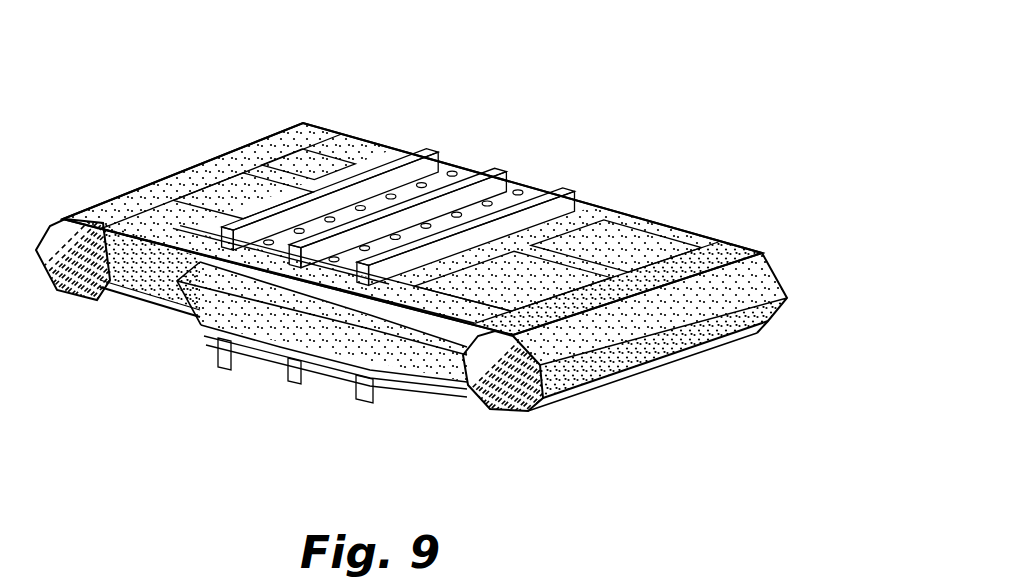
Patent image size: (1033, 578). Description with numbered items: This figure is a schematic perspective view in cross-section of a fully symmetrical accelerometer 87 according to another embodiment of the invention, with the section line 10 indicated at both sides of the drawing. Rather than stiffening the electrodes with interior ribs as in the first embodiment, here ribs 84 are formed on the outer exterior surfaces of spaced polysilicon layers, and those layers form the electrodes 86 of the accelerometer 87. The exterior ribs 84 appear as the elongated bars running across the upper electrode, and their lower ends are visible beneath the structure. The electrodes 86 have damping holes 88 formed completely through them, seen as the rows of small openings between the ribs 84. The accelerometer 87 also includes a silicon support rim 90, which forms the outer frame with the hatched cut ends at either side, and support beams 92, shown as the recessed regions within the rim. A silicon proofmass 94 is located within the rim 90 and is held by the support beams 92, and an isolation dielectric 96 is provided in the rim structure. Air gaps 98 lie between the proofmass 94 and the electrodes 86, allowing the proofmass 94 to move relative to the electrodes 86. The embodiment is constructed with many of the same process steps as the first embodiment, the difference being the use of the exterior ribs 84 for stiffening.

The section line 10- 10 is at (515, 212).
The ribs 84 is at (562, 190).
The electrodes 86 is at (209, 344).
The accelerometer 87 is at (577, 87).
The damping holes 88 is at (369, 200).
The silicon support rim 90 is at (327, 148).
The support beams 92 is at (282, 175).
The silicon proofmass 94 is at (246, 272).
The isolation dielectric 96 is at (602, 218).
The air gaps 98 is at (372, 388).